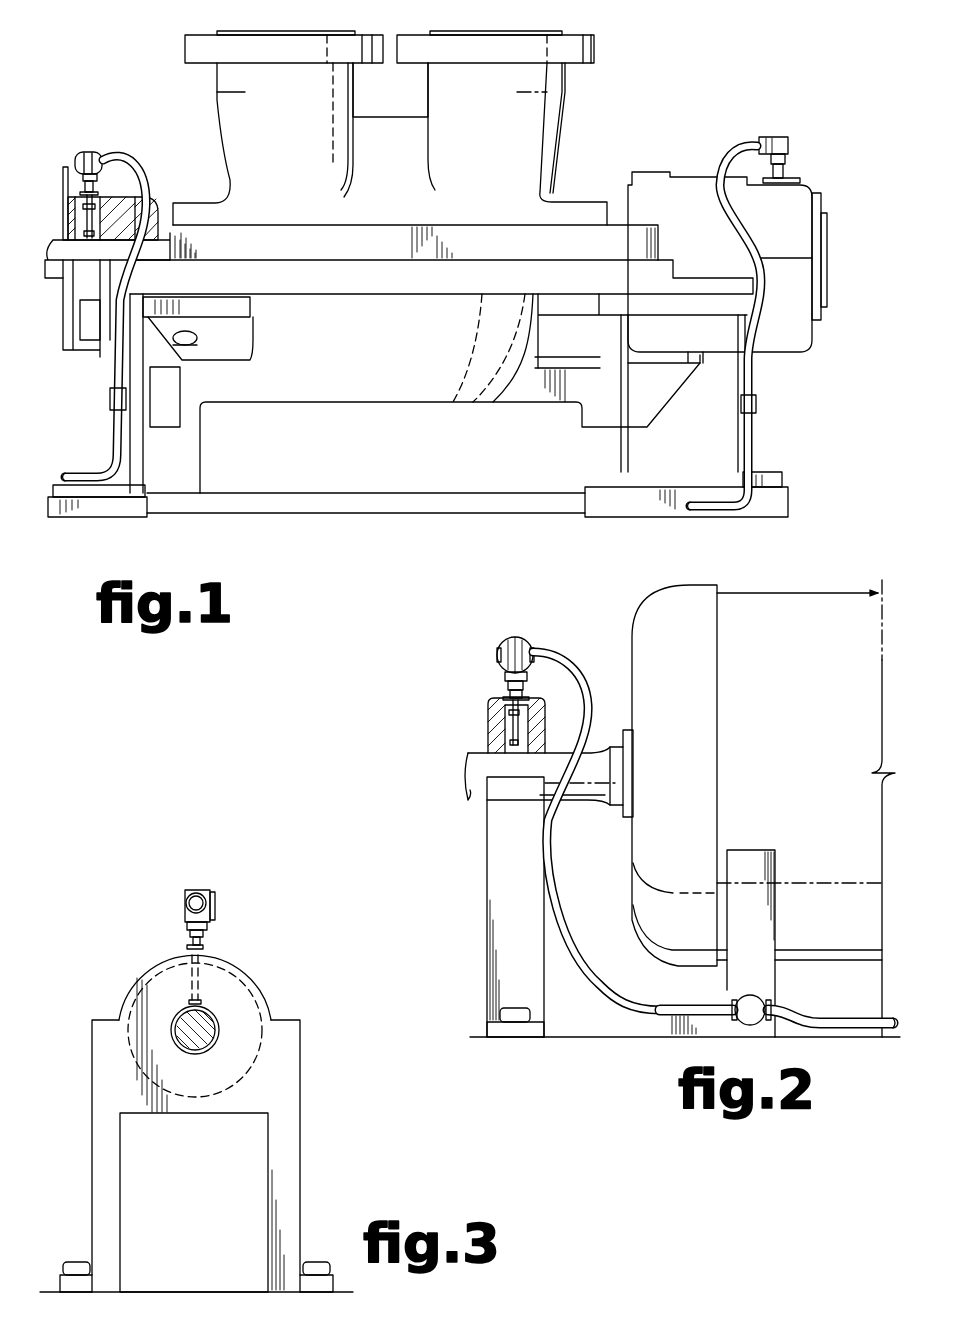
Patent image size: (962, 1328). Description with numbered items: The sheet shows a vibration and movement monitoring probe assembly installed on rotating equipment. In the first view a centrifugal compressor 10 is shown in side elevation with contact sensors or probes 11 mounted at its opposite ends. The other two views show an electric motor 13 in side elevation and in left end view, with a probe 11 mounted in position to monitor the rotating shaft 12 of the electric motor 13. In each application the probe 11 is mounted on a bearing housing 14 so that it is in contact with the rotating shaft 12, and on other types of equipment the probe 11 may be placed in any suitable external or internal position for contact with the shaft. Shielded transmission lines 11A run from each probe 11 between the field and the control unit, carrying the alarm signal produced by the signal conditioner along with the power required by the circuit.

In FIG. 1, the centrifugal compressor 10 is at (200, 143).
In FIG. 1, the contact sensor or probe 11 is at (85, 147).
In FIG. 2, the contact sensor or probe 11 is at (497, 653).
In FIG. 3, the contact sensor or probe 11 is at (198, 883).
In FIG. 1, the shielded transmission line 11A is at (117, 447).
In FIG. 2, the shielded transmission line 11A is at (553, 884).
In FIG. 1, the rotating shaft 12 is at (50, 242).
In FIG. 2, the rotating shaft 12 is at (478, 763).
In FIG. 3, the rotating shaft 12 is at (207, 1024).
In FIG. 2, the electric motor 13 is at (698, 703).
In FIG. 3, the electric motor 13 is at (132, 978).
In FIG. 1, the bearing housing 14 is at (67, 200).
In FIG. 2, the bearing housing 14 is at (488, 705).